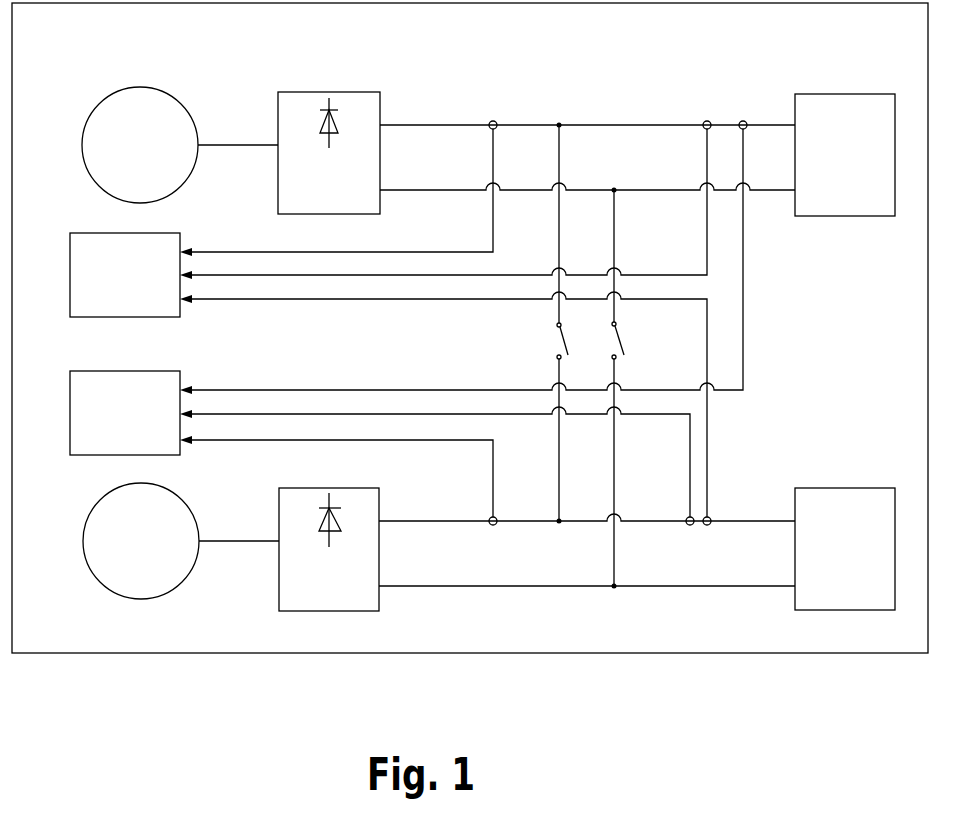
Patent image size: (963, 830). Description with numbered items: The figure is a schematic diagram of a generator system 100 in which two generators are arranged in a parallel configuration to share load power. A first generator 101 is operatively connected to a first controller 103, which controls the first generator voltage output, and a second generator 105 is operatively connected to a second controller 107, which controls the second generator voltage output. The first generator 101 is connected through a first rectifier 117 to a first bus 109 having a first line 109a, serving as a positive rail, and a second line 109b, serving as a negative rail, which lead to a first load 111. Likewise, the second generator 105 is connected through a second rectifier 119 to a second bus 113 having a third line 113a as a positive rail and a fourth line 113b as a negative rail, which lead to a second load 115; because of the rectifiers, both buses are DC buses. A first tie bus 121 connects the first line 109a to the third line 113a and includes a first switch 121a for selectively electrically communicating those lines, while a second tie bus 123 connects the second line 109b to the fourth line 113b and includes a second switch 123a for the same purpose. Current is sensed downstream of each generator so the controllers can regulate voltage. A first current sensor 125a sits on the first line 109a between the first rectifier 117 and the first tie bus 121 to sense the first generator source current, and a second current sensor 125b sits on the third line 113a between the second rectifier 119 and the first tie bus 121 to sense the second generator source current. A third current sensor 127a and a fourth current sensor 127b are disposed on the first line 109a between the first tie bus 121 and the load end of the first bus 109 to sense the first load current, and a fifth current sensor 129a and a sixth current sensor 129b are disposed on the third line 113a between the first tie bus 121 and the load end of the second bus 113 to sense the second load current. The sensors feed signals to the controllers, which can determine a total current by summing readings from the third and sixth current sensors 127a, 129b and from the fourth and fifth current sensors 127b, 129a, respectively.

The generator system 100 is at (131, 36).
The first generator 101 is at (113, 88).
The first controller 103 is at (70, 252).
The second generator 105 is at (91, 511).
The second controller 107 is at (70, 390).
The first bus 109 is at (587, 112).
The first line 109a is at (648, 124).
The second line 109b is at (645, 189).
The first load 111 is at (832, 93).
The second bus 113 is at (587, 576).
The third line 113a is at (598, 528).
The fourth line 113b is at (596, 588).
The second load 115 is at (830, 487).
The first rectifier 117 is at (308, 91).
The second rectifier 119 is at (308, 487).
The first tie bus 121 is at (558, 228).
The first switch 121a is at (558, 333).
The second tie bus 123 is at (615, 204).
The second switch 123a is at (619, 341).
The first current sensor 125a is at (490, 129).
The second current sensor 125b is at (496, 518).
The third current sensor 127a is at (704, 129).
The fourth current sensor 127b is at (745, 129).
The fifth current sensor 129a is at (686, 519).
The sixth current sensor 129b is at (711, 519).